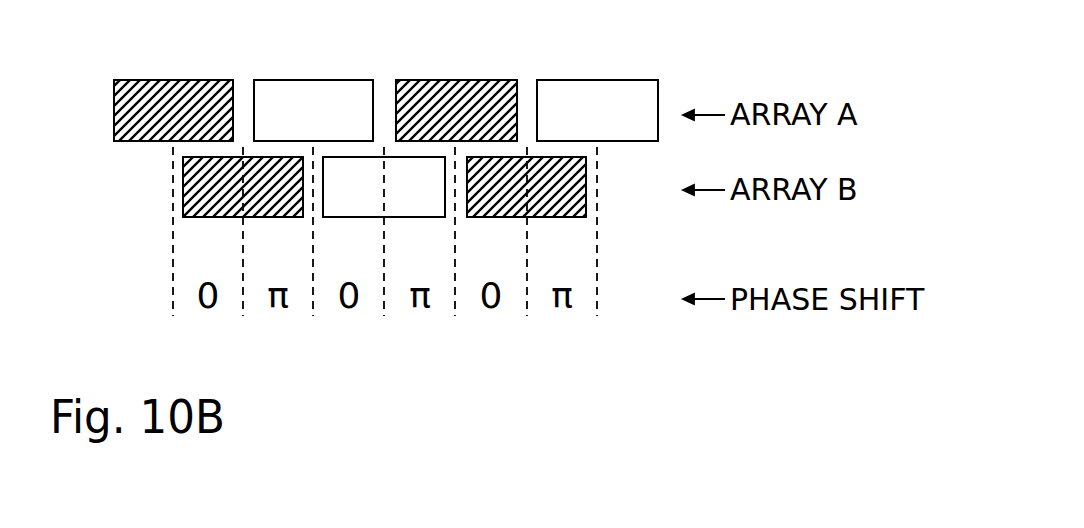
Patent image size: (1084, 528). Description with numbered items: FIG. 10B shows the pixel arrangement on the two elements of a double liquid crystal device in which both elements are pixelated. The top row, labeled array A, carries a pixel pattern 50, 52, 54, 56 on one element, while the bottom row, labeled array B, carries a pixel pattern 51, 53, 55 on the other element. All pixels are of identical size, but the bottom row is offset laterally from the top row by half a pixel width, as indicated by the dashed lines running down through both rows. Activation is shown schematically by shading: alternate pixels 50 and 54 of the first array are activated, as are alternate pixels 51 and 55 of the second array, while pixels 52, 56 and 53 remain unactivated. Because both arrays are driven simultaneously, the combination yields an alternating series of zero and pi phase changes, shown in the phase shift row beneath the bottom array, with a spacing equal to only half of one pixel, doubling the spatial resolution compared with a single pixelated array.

The pixel 50 is at (190, 80).
The pixel 51 is at (259, 218).
The pixel 52 is at (270, 80).
The pixel 53 is at (399, 218).
The pixel 54 is at (445, 80).
The pixel 55 is at (546, 218).
The pixel 56 is at (610, 80).